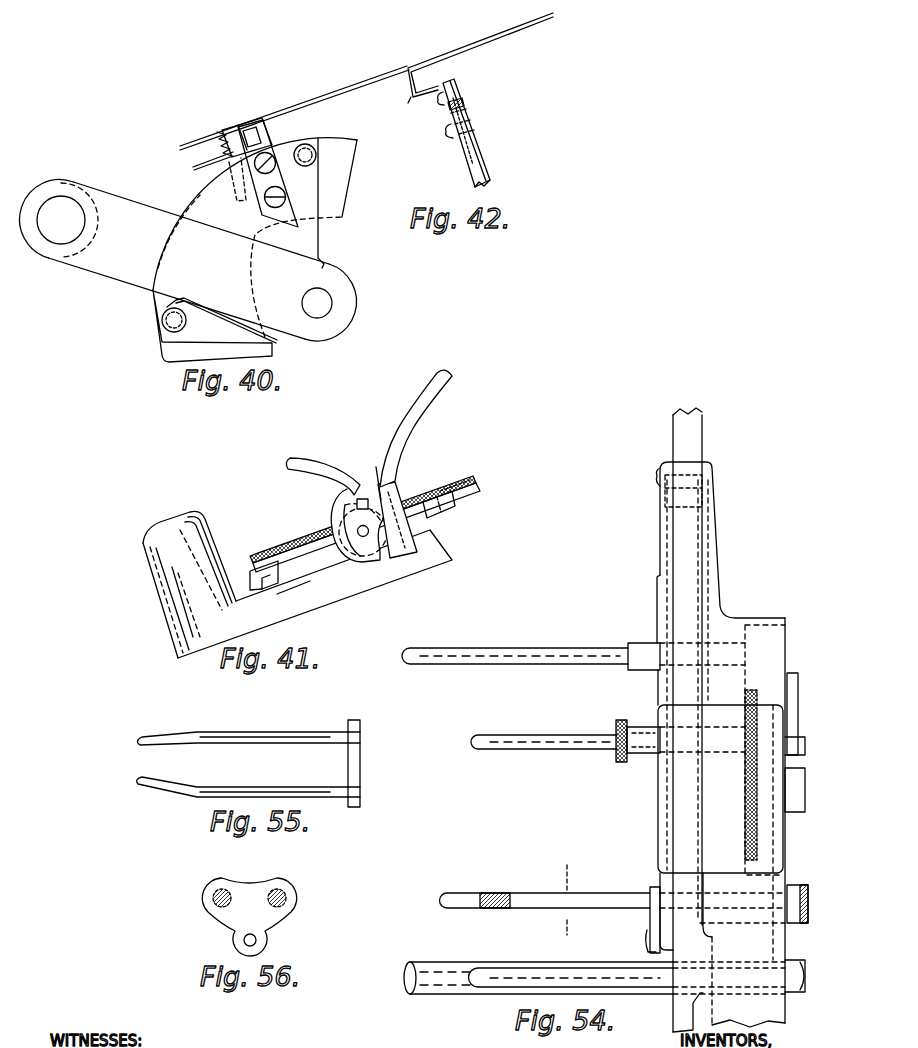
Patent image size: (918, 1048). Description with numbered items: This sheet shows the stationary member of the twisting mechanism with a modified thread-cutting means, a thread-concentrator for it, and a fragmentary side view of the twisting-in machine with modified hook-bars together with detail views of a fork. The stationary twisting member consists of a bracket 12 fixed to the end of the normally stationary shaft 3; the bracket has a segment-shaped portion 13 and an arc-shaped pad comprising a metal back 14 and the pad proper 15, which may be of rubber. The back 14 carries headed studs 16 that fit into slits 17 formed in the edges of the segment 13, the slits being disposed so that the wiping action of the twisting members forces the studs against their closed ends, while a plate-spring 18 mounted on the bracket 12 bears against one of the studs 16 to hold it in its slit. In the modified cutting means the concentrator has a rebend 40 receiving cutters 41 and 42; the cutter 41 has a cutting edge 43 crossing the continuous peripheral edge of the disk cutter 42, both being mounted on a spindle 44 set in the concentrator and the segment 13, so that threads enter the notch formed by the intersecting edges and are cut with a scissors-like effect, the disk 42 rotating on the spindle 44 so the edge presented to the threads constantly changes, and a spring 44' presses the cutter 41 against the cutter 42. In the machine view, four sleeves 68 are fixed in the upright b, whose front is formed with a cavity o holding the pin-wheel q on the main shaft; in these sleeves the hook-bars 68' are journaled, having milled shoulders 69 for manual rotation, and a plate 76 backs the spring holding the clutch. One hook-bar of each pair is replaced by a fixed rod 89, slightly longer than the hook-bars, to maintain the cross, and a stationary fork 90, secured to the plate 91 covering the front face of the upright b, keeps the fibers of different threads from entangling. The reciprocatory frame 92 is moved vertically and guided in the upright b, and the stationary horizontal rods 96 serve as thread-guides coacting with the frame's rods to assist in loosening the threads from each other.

In FIG. 40, the bracket 12 is at (106, 264).
In FIG. 41, the bracket 12 is at (333, 598).
In FIG. 40, the segment-shaped portion 13 is at (160, 342).
In FIG. 41, the segment-shaped portion 13 is at (449, 503).
In FIG. 41, the metal back 14 is at (479, 487).
In FIG. 41, the pad proper 15 is at (473, 475).
In FIG. 40, the headed studs 16 is at (304, 167).
In FIG. 41, the headed studs 16 is at (280, 584).
In FIG. 40, the slits 17 is at (315, 163).
In FIG. 40, the plate-spring 18 is at (212, 308).
In FIG. 42, the rebend 40 is at (407, 69).
In FIG. 40, the cutter 41 is at (200, 165).
In FIG. 41, the cutter 41 is at (343, 516).
In FIG. 40, the disk cutter 42 is at (255, 214).
In FIG. 42, the disk cutter 42 is at (466, 133).
In FIG. 41, the disk cutter 42 is at (394, 492).
In FIG. 41, the cutting edge 43 is at (376, 474).
In FIG. 40, the spindle 44 is at (247, 131).
In FIG. 42, the spindle 44 is at (445, 115).
In FIG. 41, the spindle 44 is at (348, 559).
In FIG. 40, the spring 44' is at (292, 108).
In FIG. 54, the normally stationary shaft 3 is at (436, 963).
In FIG. 54, the sleeves 68 is at (643, 727).
In FIG. 54, the hook-bars 68' is at (544, 729).
In FIG. 54, the milled shoulders 69 is at (619, 762).
In FIG. 54, the plate 76 is at (795, 742).
In FIG. 54, the fixed rod 89 is at (561, 655).
In FIG. 55, the stationary fork 90 is at (277, 732).
In FIG. 56, the stationary fork 90 is at (262, 925).
In FIG. 54, the stationary fork 90 is at (512, 894).
In FIG. 54, the plate 91 is at (672, 832).
In FIG. 54, the reciprocatory frame 92 is at (697, 448).
In FIG. 54, the stationary horizontal rods 96 is at (494, 987).
In FIG. 54, the upright b is at (711, 578).
In FIG. 54, the cavity o is at (728, 866).
In FIG. 54, the pin-wheel q is at (568, 898).